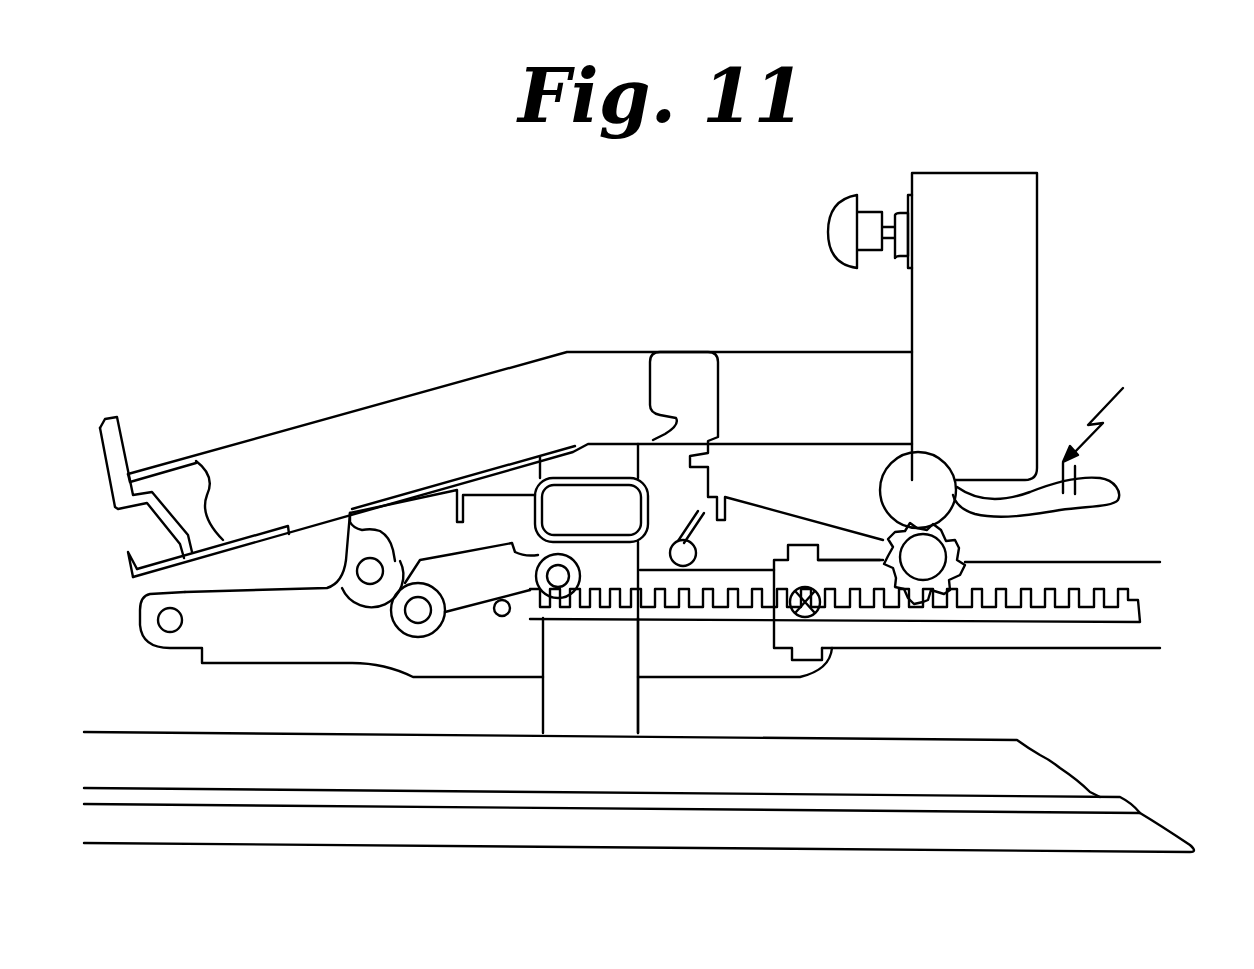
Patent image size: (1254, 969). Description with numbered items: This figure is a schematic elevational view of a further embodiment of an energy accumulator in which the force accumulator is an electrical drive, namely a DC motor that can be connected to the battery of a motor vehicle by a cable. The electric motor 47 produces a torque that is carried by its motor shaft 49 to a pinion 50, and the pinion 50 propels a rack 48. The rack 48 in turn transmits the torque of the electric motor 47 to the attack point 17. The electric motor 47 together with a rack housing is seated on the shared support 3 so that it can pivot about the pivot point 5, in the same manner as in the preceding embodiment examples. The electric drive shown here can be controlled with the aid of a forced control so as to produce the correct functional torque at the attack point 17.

The shared support 3 is at (503, 658).
The articulation point 5 is at (805, 618).
The attack point 17 is at (417, 640).
The electric motor 47 is at (878, 487).
The rack 48 is at (999, 608).
The motor shaft 49 is at (882, 458).
The pinion 50 is at (968, 543).